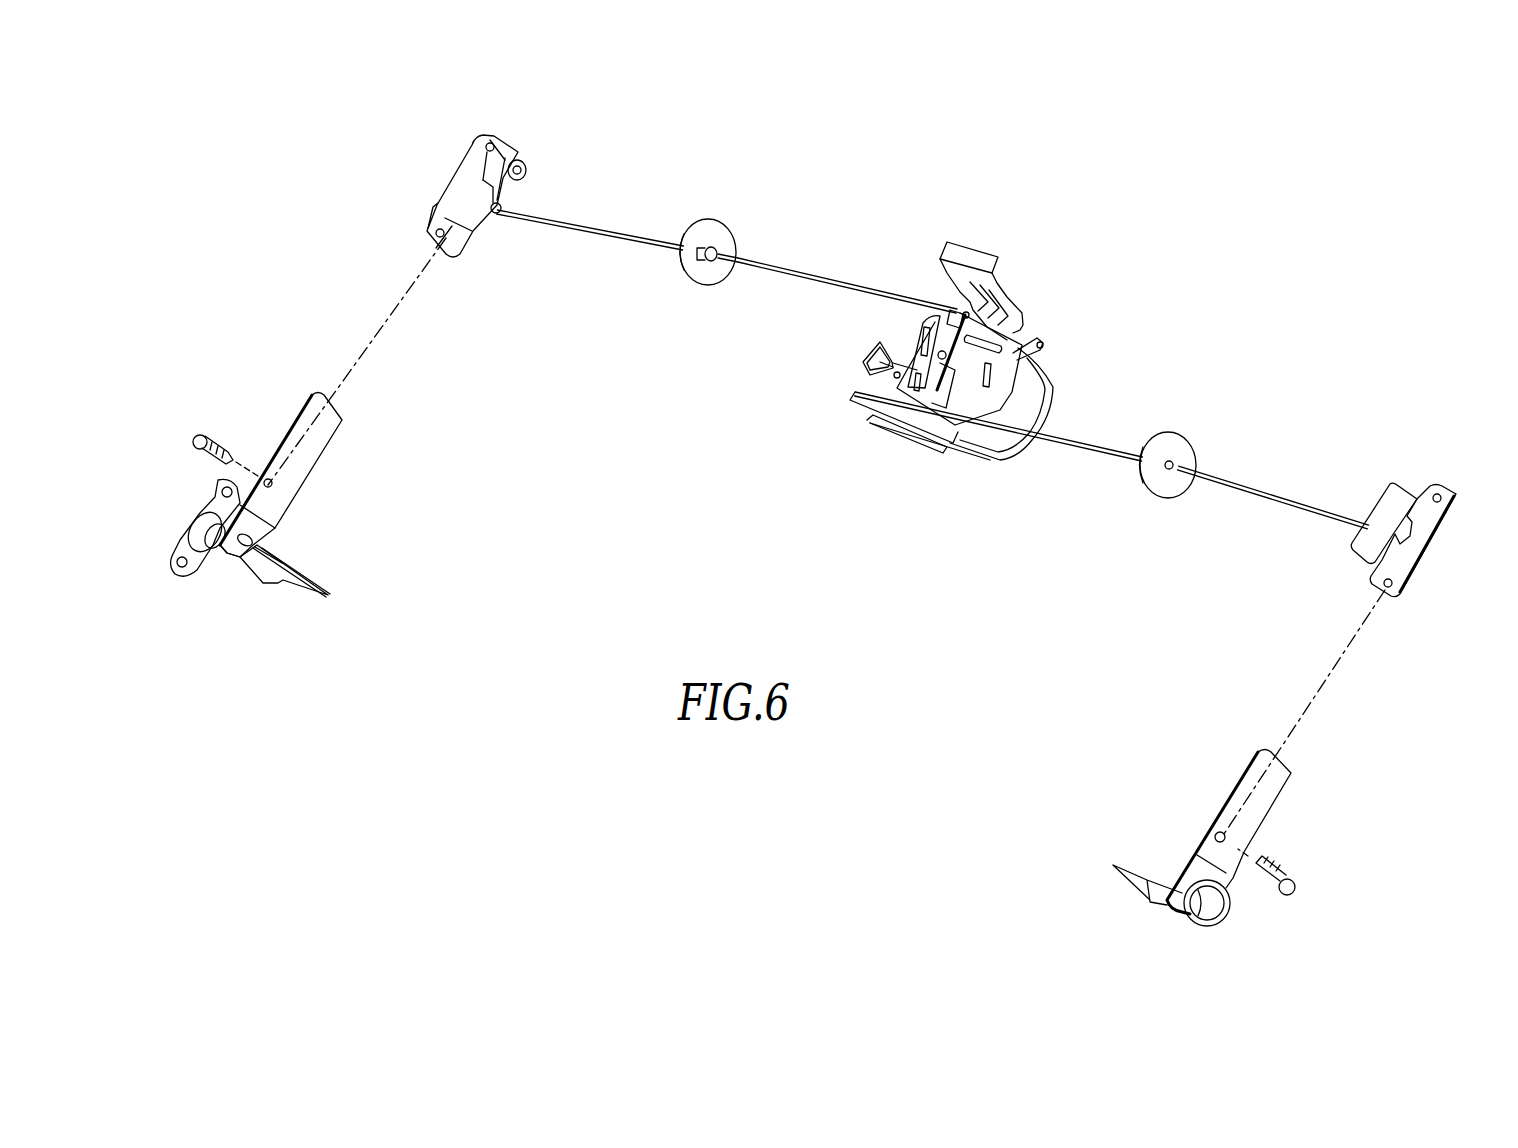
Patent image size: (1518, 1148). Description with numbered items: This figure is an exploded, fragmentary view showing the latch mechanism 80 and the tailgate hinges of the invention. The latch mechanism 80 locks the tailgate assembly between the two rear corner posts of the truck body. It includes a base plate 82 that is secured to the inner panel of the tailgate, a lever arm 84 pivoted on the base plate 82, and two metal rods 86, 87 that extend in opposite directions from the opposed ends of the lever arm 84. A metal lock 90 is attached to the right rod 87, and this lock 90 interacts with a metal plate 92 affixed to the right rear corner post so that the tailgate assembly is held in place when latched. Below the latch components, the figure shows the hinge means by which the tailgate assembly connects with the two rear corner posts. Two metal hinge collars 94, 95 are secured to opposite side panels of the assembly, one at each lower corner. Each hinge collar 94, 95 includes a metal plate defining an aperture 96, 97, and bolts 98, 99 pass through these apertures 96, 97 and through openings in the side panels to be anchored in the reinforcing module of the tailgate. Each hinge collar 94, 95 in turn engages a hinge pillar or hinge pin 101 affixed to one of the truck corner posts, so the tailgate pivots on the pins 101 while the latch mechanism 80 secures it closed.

The latch mechanism 80 is at (1050, 247).
The base plate 82 is at (1054, 390).
The lever arm 84 is at (917, 344).
The metal rod 86 is at (818, 276).
The metal rod 87 is at (1258, 486).
The metal lock 90 is at (1396, 486).
The metal plate 92 is at (1425, 522).
The hinge collar 94 is at (340, 430).
The hinge collar 95 is at (1240, 790).
The aperture 96 is at (266, 466).
The aperture 97 is at (1214, 830).
The bolt 98 is at (196, 434).
The bolt 99 is at (1292, 878).
The hinge pin 101 is at (215, 506).